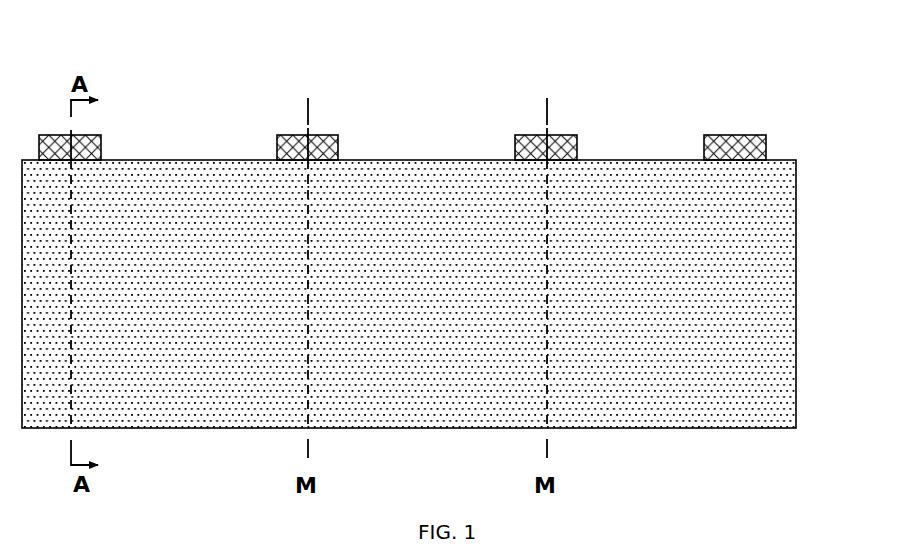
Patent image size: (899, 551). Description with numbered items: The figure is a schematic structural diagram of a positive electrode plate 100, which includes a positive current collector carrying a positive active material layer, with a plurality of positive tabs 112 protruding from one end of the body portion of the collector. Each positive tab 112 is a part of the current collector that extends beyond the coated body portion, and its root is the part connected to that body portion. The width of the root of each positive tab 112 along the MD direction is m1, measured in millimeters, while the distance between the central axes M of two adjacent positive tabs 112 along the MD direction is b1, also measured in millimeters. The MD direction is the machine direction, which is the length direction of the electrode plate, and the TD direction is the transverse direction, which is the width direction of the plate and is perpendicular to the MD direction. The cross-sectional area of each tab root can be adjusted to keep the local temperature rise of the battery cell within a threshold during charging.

The positive electrode plate 100 is at (490, 50).
The positive tab 112 is at (558, 136).
The distance between central axes of two adjacent positive tabs b1 is at (546, 115).
The width of the root of each positive tab m1 is at (765, 163).
The TD direction TD is at (832, 186).
The MD direction MD is at (795, 470).